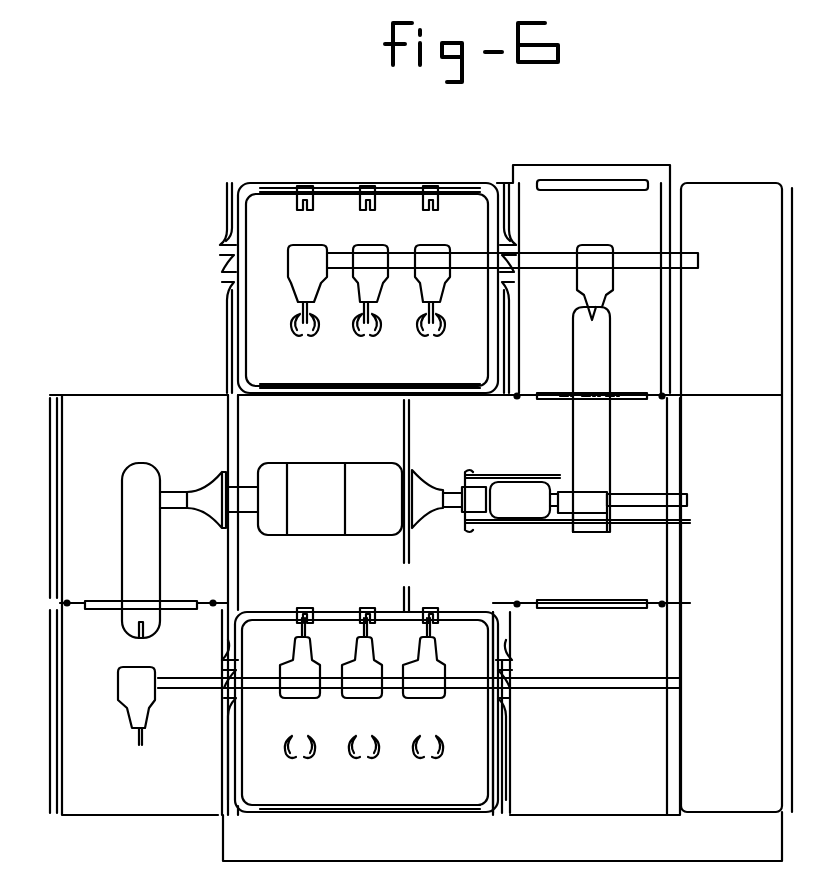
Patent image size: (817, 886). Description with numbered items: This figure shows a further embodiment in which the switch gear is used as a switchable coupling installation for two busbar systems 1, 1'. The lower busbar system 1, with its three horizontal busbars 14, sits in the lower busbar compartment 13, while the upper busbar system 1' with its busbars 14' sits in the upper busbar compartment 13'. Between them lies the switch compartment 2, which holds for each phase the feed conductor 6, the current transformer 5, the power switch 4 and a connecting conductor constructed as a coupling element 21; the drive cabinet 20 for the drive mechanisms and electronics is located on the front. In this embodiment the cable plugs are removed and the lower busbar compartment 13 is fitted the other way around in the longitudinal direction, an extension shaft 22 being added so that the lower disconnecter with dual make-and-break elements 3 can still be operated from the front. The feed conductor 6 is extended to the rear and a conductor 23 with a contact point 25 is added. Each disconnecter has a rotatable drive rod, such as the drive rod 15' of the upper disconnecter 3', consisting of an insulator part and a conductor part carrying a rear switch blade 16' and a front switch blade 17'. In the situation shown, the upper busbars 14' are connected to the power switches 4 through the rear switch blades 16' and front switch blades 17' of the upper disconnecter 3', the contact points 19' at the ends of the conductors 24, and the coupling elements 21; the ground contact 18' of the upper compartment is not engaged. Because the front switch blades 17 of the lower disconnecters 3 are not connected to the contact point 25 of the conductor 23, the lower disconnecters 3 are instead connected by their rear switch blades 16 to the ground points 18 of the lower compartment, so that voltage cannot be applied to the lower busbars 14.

The busbar system 1 is at (318, 748).
The upper busbar system 1' is at (324, 290).
The switch compartment 2 is at (130, 415).
The busbar disconnecter 3 is at (535, 733).
The upper busbar disconnecter 3' is at (556, 255).
The power switch 4 is at (520, 500).
The current transformer 5 is at (318, 492).
The feed conductor 6 is at (245, 492).
The busbar compartment 13 is at (367, 735).
The upper busbar compartment 13' is at (367, 257).
The busbars 14 is at (364, 767).
The upper busbars 14' is at (338, 309).
The drive rod 15' is at (512, 238).
The rear switch blade 16 is at (362, 629).
The rear switch blade 16' is at (448, 309).
The front switch blade 17 is at (121, 706).
The front switch blade 17' is at (616, 277).
The ground contact 18 is at (365, 591).
The ground contact 18' is at (390, 165).
The contact point 19' is at (616, 351).
The drive cabinet 20 is at (722, 215).
The coupling element 21 is at (607, 495).
The extension shaft 22 is at (565, 682).
The conductor 23 is at (128, 510).
The conductor 24 is at (597, 437).
The contact point 25 is at (130, 632).